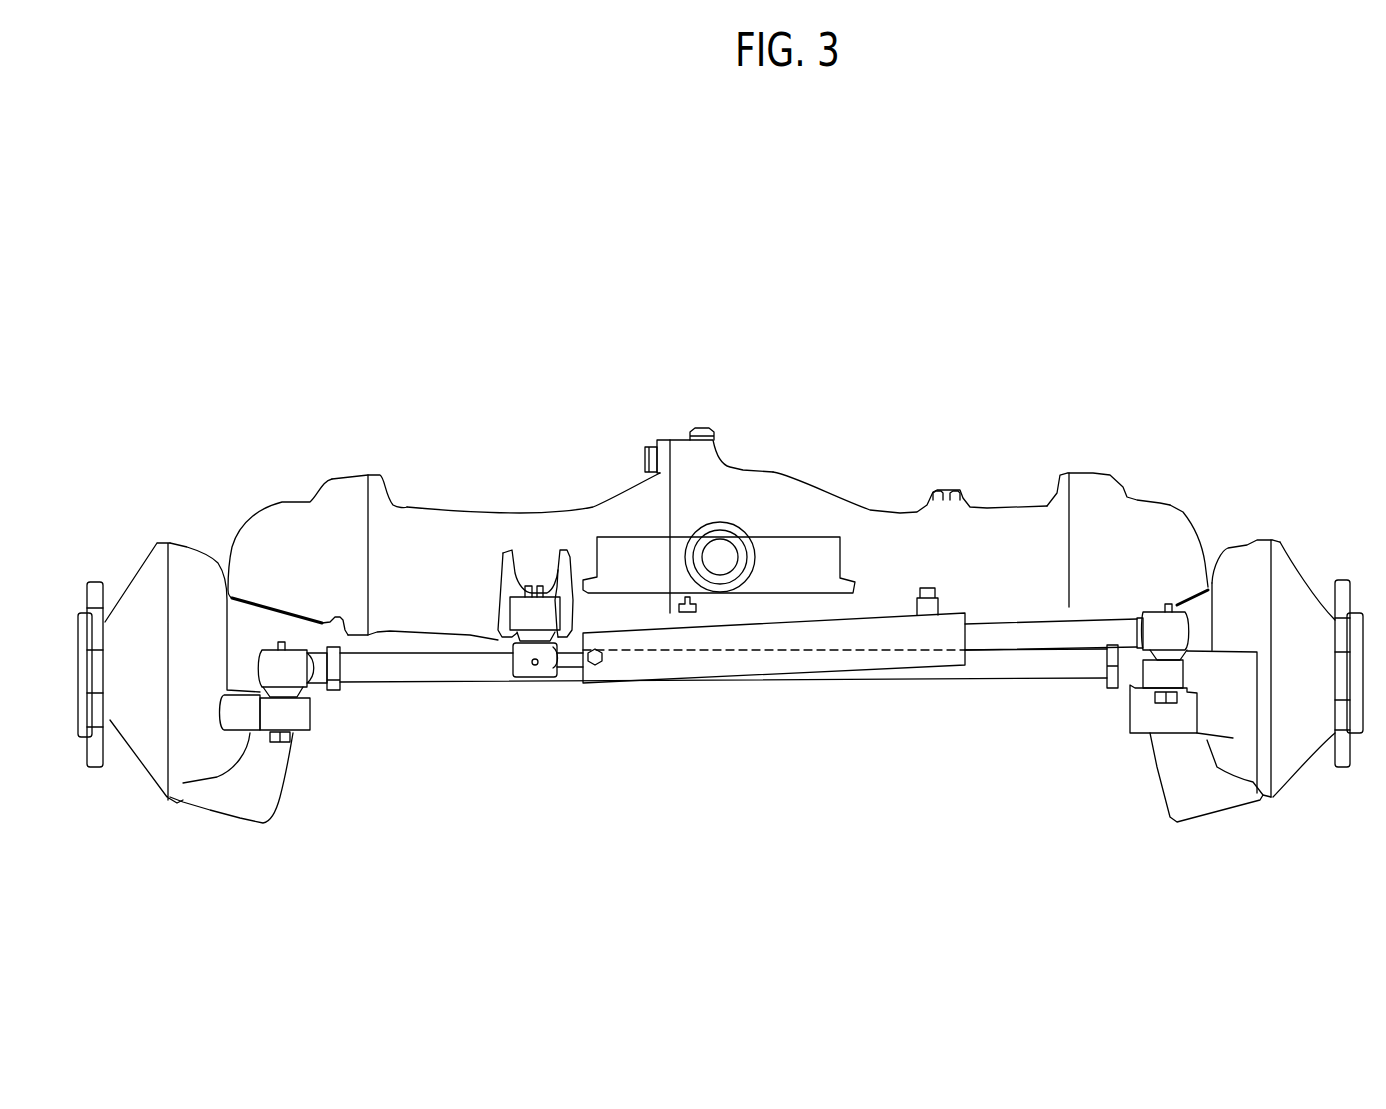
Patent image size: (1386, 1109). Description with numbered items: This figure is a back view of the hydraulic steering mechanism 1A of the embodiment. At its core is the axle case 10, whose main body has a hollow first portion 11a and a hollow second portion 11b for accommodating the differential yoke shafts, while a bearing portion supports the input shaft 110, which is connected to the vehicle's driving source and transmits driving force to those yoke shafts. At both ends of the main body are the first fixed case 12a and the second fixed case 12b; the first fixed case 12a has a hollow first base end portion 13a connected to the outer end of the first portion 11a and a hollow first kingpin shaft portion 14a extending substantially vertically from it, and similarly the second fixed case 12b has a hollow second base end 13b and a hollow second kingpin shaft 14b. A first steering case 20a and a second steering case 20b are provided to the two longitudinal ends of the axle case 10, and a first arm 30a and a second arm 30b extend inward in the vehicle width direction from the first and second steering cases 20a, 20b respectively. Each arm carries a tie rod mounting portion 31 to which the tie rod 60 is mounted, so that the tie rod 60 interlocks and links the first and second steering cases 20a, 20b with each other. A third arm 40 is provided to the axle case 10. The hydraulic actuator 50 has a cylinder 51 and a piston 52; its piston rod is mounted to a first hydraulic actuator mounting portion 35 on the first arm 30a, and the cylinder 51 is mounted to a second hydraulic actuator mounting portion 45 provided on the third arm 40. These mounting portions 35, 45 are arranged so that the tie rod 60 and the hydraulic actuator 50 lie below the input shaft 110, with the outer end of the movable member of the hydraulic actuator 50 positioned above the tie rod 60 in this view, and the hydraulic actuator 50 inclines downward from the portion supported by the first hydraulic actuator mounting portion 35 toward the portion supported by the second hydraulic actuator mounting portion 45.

The hydraulic steering mechanism 1A is at (987, 393).
The axle case 10 is at (880, 420).
The first portion 11a is at (732, 482).
The second portion 11b is at (625, 508).
The input shaft 110 is at (720, 553).
The first fixed case 12a is at (1236, 387).
The second fixed case 12b is at (337, 387).
The first base end portion 13a is at (1090, 487).
The second base end 13b is at (345, 488).
The first kingpin shaft portion 14a is at (1183, 557).
The second kingpin shaft 14b is at (250, 573).
The first steering case 20a is at (1297, 517).
The second steering case 20b is at (185, 517).
The first arm 30a is at (1167, 727).
The second arm 30b is at (245, 718).
The tie rod mounting portion 31 is at (307, 700).
The first hydraulic actuator mounting portion 35 is at (1193, 652).
The third arm 40 is at (503, 583).
The second hydraulic actuator mounting portion 45 is at (565, 577).
The hydraulic actuator 50 is at (910, 773).
The cylinder 51 is at (752, 665).
The piston 52 is at (1023, 637).
The tie rod 60 is at (467, 668).